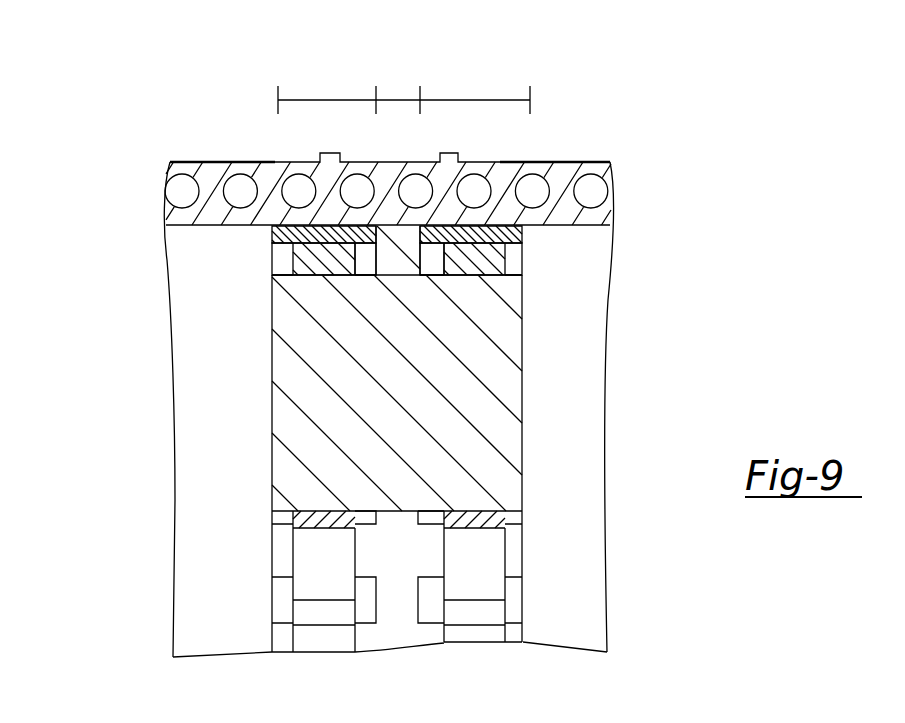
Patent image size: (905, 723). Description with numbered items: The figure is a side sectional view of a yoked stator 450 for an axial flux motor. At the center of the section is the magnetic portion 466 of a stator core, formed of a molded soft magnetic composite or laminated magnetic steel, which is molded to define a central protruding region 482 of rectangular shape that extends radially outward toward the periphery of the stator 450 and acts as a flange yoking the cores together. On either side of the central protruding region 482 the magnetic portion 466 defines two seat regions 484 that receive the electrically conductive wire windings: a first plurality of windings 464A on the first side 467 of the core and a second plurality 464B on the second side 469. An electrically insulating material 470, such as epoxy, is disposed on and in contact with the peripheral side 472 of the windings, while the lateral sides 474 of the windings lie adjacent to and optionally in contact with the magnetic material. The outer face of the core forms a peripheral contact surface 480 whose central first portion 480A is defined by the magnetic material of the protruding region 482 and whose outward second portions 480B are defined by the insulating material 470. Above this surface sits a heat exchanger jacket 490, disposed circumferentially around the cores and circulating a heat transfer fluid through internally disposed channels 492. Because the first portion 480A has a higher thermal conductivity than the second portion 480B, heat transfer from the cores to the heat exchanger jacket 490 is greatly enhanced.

The stator 450 is at (107, 148).
The heat exchanger jacket 490 is at (168, 173).
The internally disposed channels 492 is at (240, 188).
The peripheral contact surface 480 is at (506, 224).
The first portion of the peripheral contact surface 480A is at (392, 100).
The second portion of the peripheral contact surface 480B is at (297, 100).
The central protruding region 482 is at (400, 237).
The peripheral side 472 is at (488, 236).
The electrically insulating material 470 is at (270, 236).
The first plurality of electrically conductive wire windings 464A is at (270, 265).
The second plurality of core components 464B is at (522, 262).
The first side 467 is at (250, 294).
The second side 469 is at (523, 304).
The magnetic portion 466 is at (505, 392).
The seat regions 484 is at (305, 277).
The lateral sides 474 is at (434, 262).